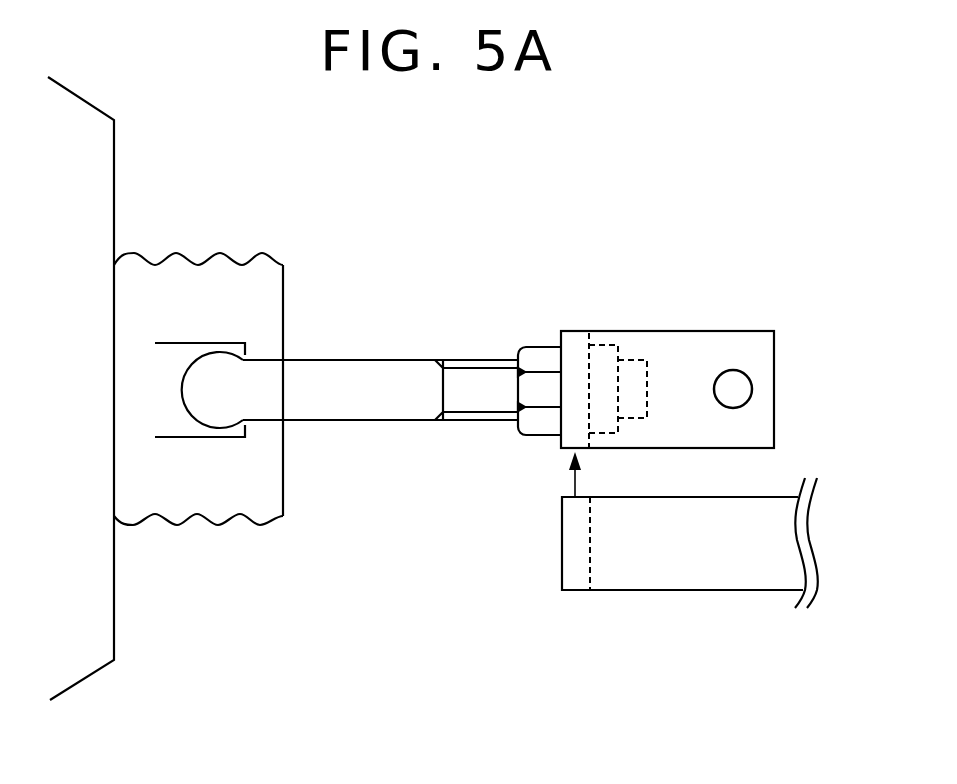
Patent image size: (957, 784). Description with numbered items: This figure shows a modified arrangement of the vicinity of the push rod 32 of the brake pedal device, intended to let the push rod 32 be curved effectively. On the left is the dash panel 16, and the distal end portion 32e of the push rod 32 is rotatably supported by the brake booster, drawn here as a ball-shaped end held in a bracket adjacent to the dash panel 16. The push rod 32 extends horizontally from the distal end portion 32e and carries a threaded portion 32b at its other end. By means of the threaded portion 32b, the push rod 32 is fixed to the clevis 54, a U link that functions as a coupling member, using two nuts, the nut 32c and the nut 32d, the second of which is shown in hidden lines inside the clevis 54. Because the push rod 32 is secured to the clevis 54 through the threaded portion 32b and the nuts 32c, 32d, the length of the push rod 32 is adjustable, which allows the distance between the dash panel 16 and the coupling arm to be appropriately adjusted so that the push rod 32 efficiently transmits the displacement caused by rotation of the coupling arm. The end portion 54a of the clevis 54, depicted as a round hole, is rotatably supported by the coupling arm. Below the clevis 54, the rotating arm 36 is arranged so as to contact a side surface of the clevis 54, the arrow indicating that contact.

The dash panel 16 is at (95, 623).
The push rod 32 is at (360, 358).
The threaded portion 32b is at (480, 423).
The nut 32c is at (541, 355).
The nut 32d is at (605, 353).
The distal end portion 32e is at (215, 398).
The rotating arm 36 is at (682, 568).
The clevis 54 is at (693, 353).
The end portion 54a is at (742, 388).